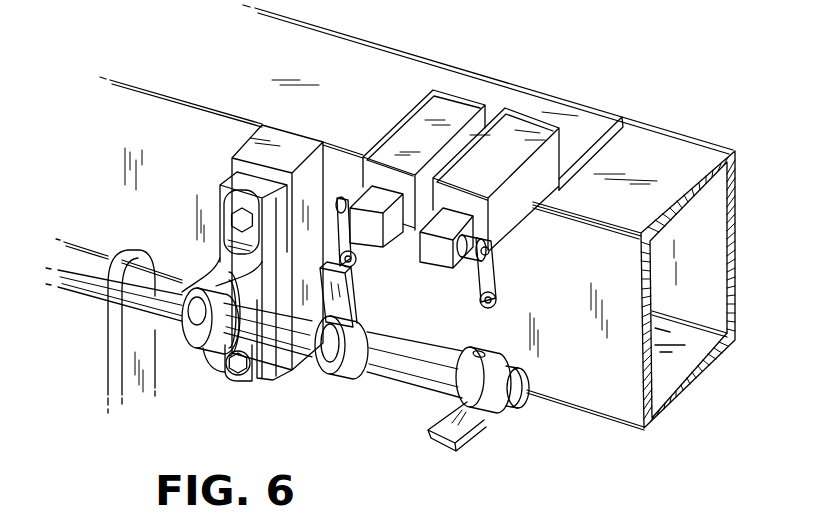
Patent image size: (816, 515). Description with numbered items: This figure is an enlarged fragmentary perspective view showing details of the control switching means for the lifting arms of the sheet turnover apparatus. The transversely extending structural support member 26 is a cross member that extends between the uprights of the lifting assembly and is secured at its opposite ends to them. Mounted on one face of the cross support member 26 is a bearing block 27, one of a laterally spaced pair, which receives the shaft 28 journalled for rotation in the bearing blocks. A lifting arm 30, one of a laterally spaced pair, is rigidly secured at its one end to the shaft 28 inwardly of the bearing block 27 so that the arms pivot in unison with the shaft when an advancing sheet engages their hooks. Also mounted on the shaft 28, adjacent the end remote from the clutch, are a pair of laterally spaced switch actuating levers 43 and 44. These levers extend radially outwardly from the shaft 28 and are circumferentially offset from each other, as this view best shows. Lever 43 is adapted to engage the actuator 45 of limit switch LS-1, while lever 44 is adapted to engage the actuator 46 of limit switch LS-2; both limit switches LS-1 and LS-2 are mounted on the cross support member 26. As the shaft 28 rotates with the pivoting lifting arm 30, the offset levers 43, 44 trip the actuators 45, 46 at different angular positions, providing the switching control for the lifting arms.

The cross support member 26 is at (667, 148).
The bearing block 27 is at (196, 349).
The shaft 28 is at (388, 373).
The lifting arm 30 is at (115, 337).
The switch actuating lever 43 is at (461, 422).
The switch actuating lever 44 is at (353, 297).
The actuator 45 is at (492, 280).
The actuator 46 is at (358, 254).
The limit switch LS-1 is at (538, 126).
The limit switch LS-2 is at (444, 98).